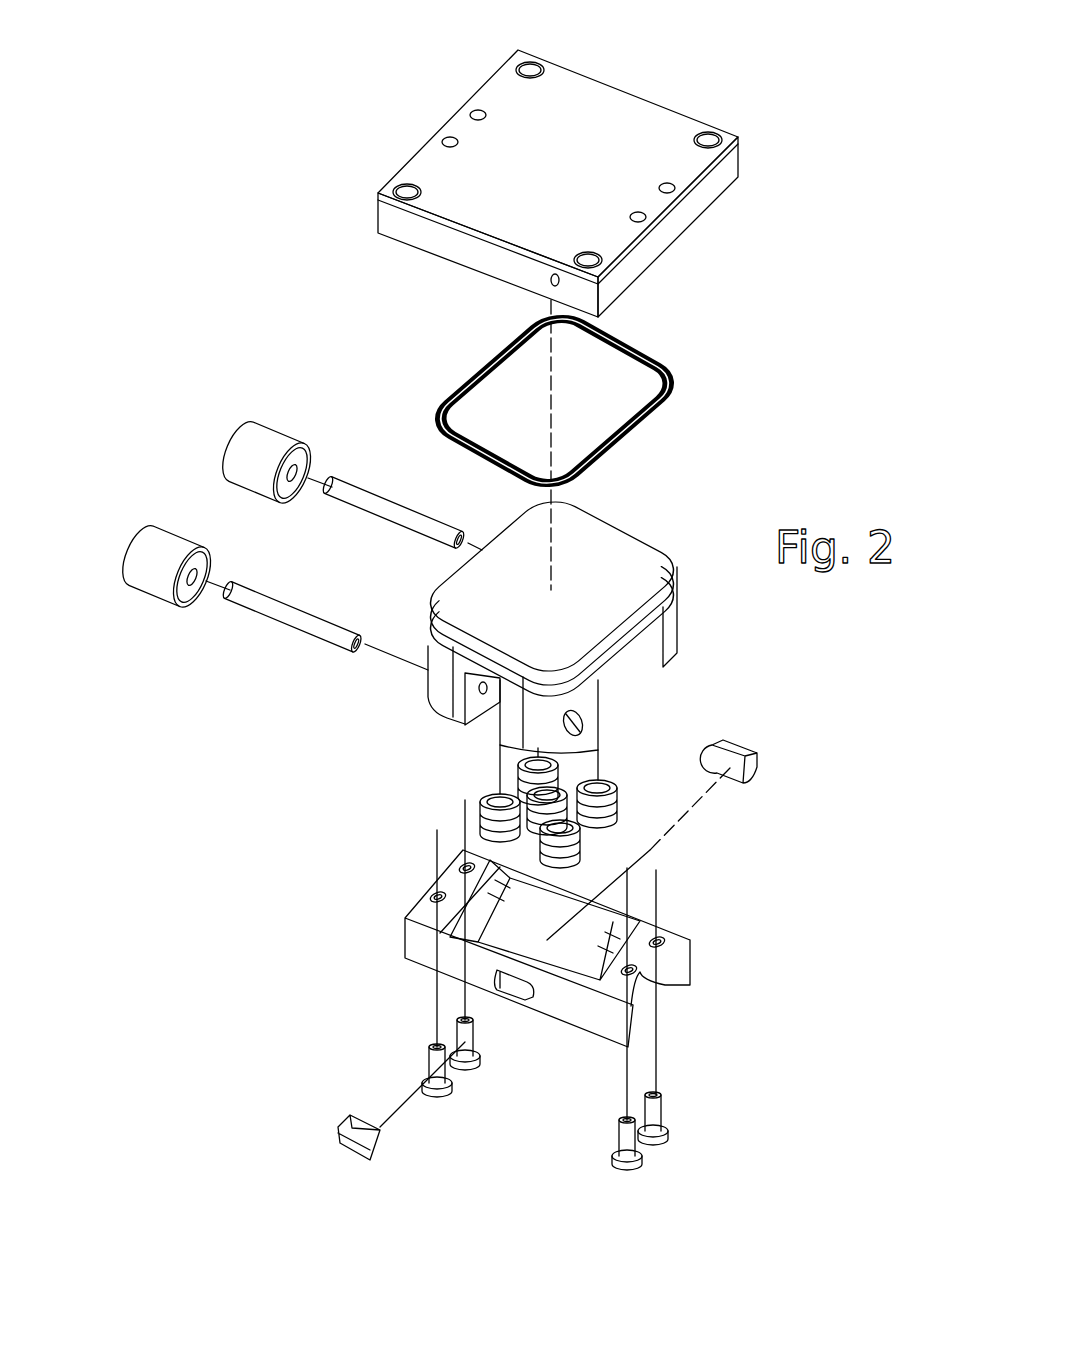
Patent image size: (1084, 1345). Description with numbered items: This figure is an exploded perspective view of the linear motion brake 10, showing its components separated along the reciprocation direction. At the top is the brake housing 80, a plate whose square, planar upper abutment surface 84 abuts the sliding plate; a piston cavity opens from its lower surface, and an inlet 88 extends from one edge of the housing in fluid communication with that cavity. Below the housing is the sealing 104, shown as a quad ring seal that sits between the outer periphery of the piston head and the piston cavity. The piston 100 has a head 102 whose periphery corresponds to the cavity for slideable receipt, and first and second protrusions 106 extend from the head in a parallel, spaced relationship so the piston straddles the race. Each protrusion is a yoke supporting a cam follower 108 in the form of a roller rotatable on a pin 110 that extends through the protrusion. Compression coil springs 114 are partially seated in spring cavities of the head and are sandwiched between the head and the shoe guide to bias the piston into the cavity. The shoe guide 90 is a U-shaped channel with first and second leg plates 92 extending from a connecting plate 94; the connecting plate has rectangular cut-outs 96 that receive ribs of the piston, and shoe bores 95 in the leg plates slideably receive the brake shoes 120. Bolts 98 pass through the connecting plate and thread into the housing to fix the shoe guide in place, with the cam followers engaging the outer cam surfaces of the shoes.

The brake 10 is at (812, 122).
The brake housing 80 is at (539, 173).
The upper abutment surface 84 is at (457, 175).
The inlet 88 is at (551, 282).
The sealing 104 is at (680, 358).
The piston 100 is at (570, 608).
The head 102 is at (513, 557).
The protrusions 106 is at (518, 727).
The cam follower 108 is at (267, 443).
The pin 110 is at (378, 507).
The compression coil springs 114 is at (612, 800).
The shoe guide 90 is at (539, 1019).
The leg plates 92 is at (420, 945).
The connecting plate 94 is at (593, 920).
The rectangular cut-outs 96 is at (453, 925).
The shoe bores 95 is at (523, 993).
The bolts 98 is at (660, 1133).
The brake shoes 120 is at (753, 748).